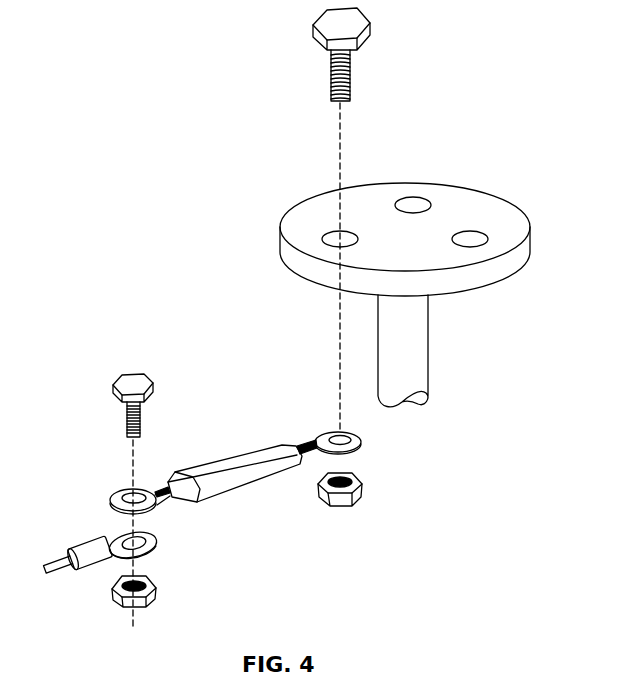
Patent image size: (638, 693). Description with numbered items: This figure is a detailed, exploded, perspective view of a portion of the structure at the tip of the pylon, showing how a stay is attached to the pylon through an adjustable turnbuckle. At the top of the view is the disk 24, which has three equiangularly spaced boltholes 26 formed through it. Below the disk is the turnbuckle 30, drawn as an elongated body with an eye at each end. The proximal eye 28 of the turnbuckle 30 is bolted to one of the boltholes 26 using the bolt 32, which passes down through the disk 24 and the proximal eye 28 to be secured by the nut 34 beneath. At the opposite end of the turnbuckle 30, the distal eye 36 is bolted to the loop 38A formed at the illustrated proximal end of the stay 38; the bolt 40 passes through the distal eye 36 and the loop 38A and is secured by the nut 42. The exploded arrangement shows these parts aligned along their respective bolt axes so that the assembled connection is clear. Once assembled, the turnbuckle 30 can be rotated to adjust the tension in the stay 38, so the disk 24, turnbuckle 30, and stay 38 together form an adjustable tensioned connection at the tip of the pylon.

The disk 24 is at (530, 245).
The bolthole 26 is at (415, 203).
The proximal eye 28 is at (362, 436).
The turnbuckle 30 is at (243, 490).
The bolt 32 is at (352, 25).
The nut 34 is at (358, 487).
The distal eye 36 is at (112, 500).
The stay 38 is at (45, 565).
The loop 38A is at (158, 548).
The bolt 40 is at (127, 415).
The nut 42 is at (112, 586).